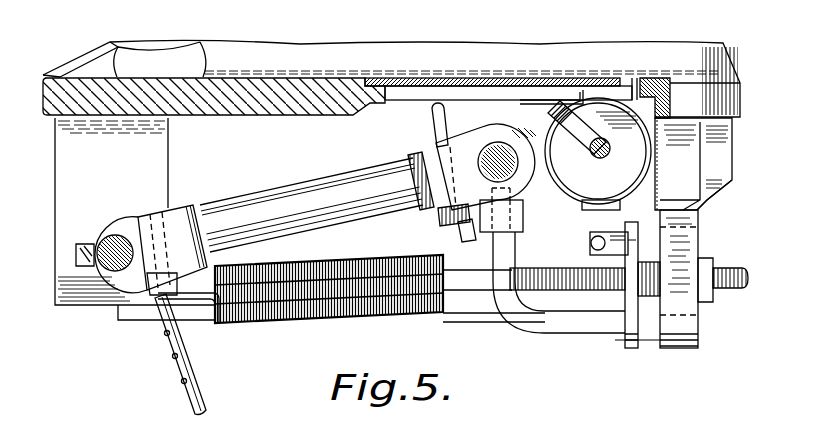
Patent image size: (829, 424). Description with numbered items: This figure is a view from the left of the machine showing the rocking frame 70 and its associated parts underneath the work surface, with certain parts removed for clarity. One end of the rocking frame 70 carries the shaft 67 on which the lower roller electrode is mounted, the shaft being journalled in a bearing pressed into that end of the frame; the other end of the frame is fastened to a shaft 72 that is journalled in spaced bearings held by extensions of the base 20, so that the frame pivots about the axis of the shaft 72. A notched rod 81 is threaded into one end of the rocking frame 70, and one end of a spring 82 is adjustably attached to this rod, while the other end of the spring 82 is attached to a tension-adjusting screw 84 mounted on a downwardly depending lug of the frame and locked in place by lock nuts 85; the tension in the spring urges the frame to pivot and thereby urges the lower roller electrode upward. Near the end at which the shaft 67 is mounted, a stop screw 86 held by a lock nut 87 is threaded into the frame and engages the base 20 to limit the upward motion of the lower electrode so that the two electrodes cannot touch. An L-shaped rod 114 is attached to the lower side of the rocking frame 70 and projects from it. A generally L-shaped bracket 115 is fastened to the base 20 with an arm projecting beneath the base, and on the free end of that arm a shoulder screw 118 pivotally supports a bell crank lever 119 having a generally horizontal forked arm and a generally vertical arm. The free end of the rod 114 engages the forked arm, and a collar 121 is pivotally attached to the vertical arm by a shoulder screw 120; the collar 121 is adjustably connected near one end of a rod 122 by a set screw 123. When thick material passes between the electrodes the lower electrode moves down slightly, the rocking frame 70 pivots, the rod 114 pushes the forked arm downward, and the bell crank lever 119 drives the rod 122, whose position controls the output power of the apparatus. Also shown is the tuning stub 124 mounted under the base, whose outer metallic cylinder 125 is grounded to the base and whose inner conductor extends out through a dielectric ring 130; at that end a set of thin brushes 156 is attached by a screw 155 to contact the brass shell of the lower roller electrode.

The base 20 is at (270, 110).
The shaft 67 is at (500, 150).
The thin brushes 156 is at (571, 110).
The tuning stub 124 is at (640, 92).
The stop screw 86 is at (432, 128).
The shaft 72 is at (118, 232).
The rocking frame 70 is at (317, 202).
The spring 82 is at (317, 263).
The lock nut 87 is at (437, 222).
The notched rod 81 is at (172, 367).
The rod 122 is at (592, 228).
The collar 121 is at (593, 240).
The set screw 123 is at (605, 256).
The shoulder screw 120 is at (641, 228).
The screw 155 is at (598, 158).
The dielectric ring 130 is at (632, 157).
The outer metallic cylinder 125 is at (712, 182).
The lock nuts 85 is at (708, 254).
The tension-adjusting screw 84 is at (731, 268).
The L-shaped bracket 115 is at (681, 305).
The L-shaped rod 114 is at (580, 330).
The shoulder screw 118 is at (617, 340).
The bell crank lever 119 is at (643, 327).